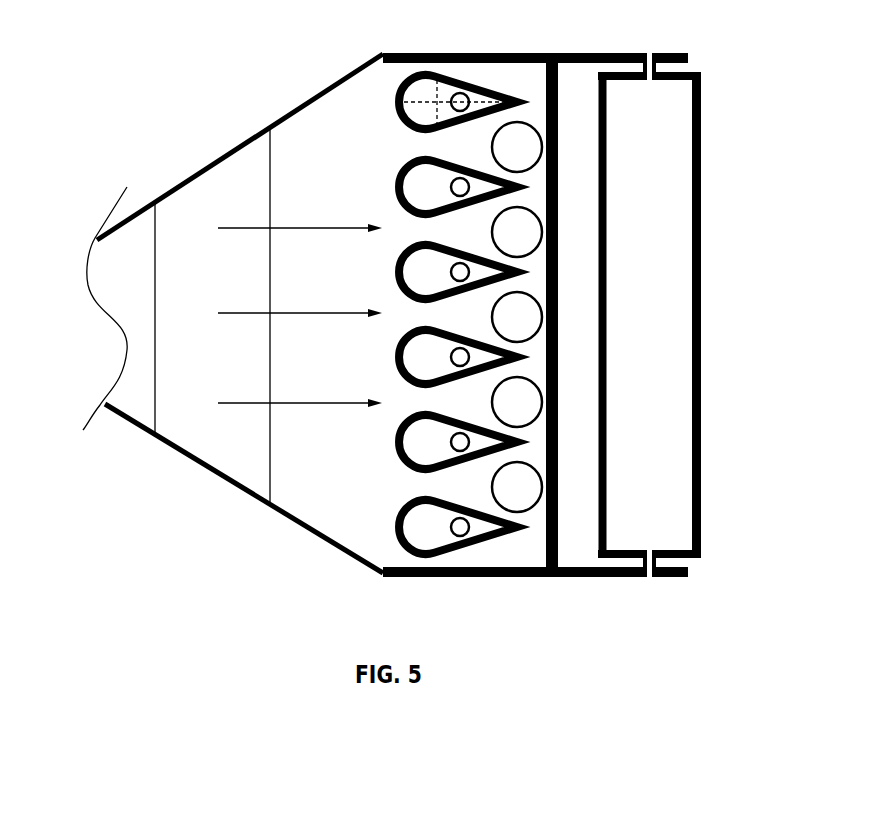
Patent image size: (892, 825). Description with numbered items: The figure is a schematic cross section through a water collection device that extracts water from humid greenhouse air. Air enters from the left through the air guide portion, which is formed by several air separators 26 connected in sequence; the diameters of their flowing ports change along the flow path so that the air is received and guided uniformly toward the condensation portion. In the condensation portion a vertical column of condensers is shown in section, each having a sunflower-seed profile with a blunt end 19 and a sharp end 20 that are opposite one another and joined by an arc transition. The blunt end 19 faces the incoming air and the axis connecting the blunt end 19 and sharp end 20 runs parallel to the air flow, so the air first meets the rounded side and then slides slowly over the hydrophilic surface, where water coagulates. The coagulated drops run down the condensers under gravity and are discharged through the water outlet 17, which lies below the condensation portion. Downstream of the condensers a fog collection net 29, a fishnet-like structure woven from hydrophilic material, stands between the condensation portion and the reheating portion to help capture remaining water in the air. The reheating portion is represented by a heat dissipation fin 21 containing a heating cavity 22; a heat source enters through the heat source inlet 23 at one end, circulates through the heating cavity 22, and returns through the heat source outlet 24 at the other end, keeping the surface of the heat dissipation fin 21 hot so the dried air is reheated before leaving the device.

The water outlet 17 is at (535, 472).
The blunt end 19 is at (400, 97).
The sharp end 20 is at (520, 185).
The heat dissipation fin 21 is at (702, 315).
The heating cavity 22 is at (667, 493).
The heat source inlet 23 is at (650, 53).
The heat source outlet 24 is at (647, 573).
The air separator 26 is at (215, 437).
The fog collection net 29 is at (557, 270).